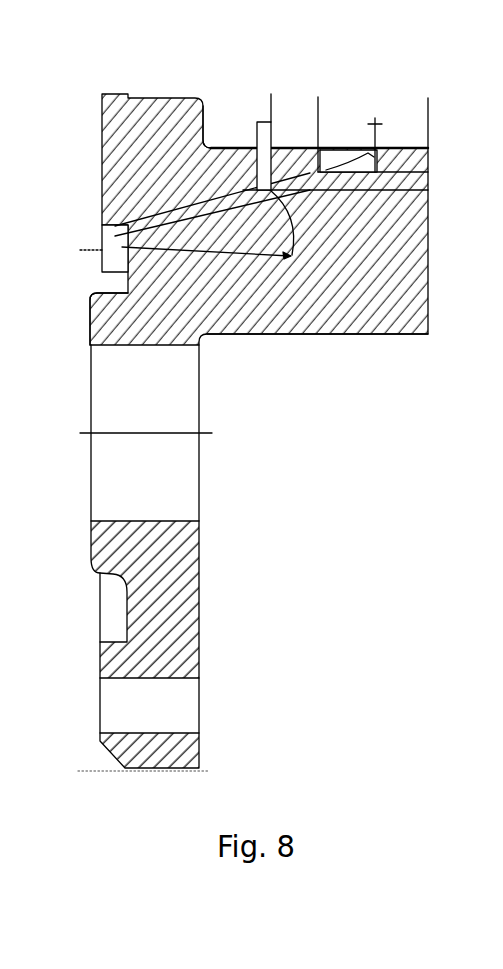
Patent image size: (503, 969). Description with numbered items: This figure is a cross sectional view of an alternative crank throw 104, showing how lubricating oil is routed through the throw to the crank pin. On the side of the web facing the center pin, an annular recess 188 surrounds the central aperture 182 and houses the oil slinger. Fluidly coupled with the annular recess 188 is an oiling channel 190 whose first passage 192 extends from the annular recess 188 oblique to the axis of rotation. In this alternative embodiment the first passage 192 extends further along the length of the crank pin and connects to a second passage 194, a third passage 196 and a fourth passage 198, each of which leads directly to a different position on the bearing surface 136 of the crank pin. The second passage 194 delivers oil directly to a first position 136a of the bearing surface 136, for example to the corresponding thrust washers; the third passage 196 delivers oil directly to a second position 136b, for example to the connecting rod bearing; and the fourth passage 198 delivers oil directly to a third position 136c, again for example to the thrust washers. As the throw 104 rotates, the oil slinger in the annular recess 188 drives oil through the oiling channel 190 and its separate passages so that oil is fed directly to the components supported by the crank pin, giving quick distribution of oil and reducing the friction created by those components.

The throw 104 is at (172, 37).
The bearing surface 136 is at (223, 145).
The first position of the bearing surface 136a is at (273, 148).
The second position of the bearing surface 136b is at (320, 150).
The third position of the bearing surface 136c is at (382, 148).
The central aperture 182 is at (125, 521).
The annular recess 188 is at (103, 273).
The oiling channel 190 is at (224, 217).
The first passage 192 is at (128, 207).
The second passage 194 is at (320, 143).
The third passage 196 is at (271, 97).
The fourth passage 198 is at (380, 147).